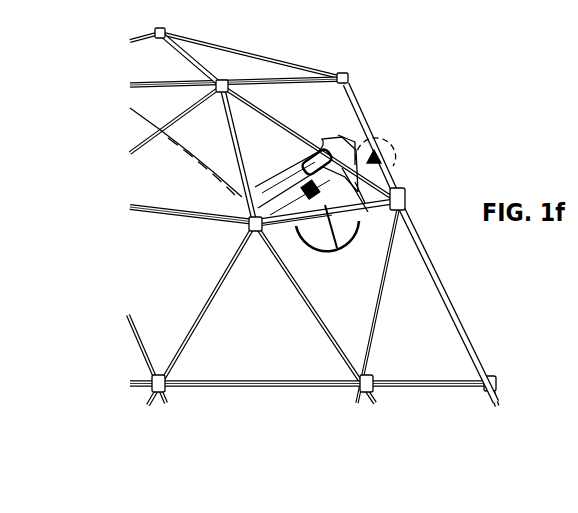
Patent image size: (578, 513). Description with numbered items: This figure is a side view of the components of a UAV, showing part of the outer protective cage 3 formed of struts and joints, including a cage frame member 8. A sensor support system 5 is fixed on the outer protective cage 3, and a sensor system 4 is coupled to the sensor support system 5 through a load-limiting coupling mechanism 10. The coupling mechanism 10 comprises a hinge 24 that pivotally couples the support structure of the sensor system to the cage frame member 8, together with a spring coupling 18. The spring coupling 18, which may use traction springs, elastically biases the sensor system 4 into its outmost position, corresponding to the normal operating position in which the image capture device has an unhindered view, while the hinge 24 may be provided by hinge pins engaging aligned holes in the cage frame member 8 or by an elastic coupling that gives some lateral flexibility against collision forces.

The outer protective cage 3 is at (261, 35).
The sensor support system 5 is at (404, 105).
The cage frame member 8 is at (453, 298).
The sensor system 4 is at (368, 253).
The load-limiting coupling mechanism 10 is at (391, 137).
The hinge 24 is at (385, 147).
The spring coupling 18 is at (392, 163).